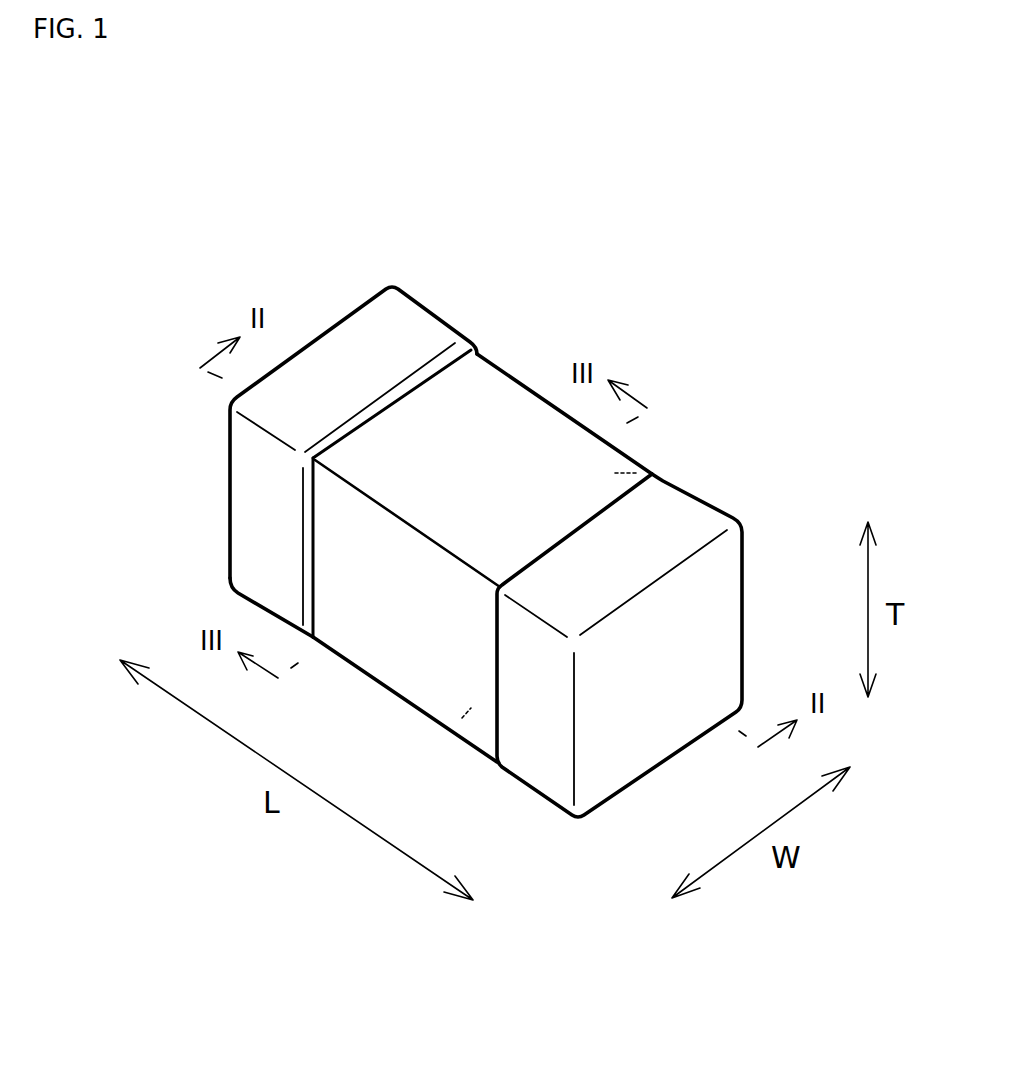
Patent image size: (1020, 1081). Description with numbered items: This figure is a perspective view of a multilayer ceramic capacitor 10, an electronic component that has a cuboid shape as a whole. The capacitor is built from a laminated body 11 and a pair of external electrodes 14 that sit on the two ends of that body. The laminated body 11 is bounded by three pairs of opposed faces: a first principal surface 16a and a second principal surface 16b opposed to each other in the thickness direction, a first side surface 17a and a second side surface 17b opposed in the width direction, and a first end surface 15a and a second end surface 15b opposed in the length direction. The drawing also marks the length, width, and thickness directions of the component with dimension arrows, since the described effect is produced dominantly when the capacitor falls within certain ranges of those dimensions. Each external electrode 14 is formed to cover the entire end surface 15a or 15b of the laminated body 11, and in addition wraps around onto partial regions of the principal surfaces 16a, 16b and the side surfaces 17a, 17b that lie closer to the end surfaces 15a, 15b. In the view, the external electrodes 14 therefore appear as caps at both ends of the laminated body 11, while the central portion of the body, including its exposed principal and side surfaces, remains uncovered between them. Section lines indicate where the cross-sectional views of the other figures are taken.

The multilayer ceramic capacitor 10 is at (459, 556).
The laminated body 11 is at (498, 395).
The external electrode 14 is at (428, 325).
The first end surface 15a is at (268, 492).
The second end surface 15b is at (602, 735).
The first principal surface 16a is at (598, 458).
The second principal surface 16b is at (460, 727).
The first side surface 17a is at (410, 653).
The second side surface 17b is at (646, 472).